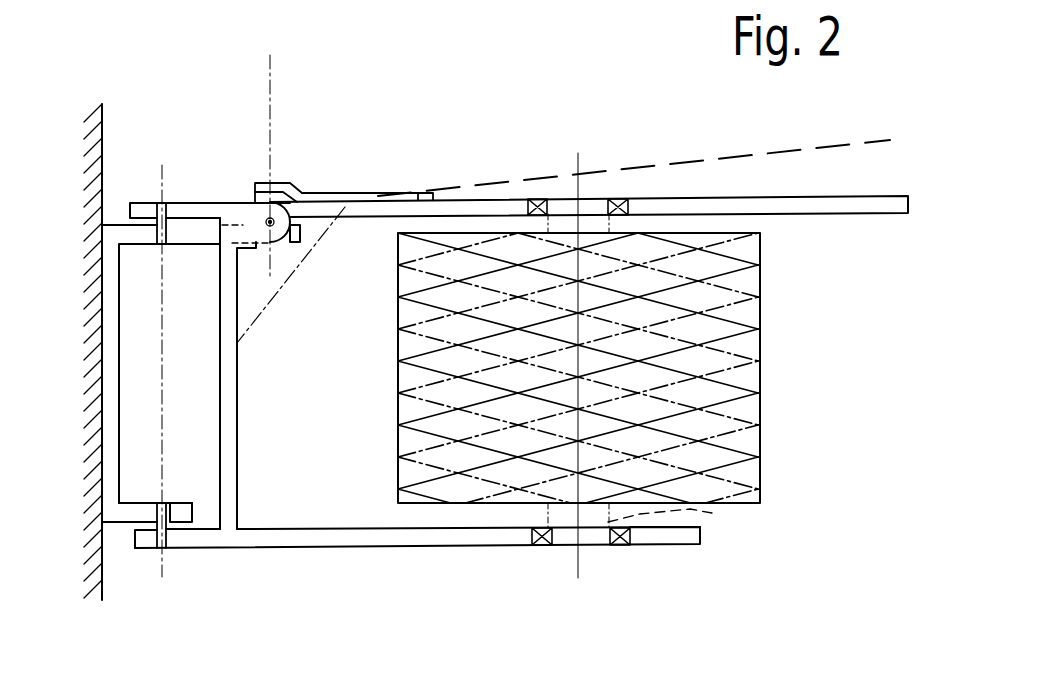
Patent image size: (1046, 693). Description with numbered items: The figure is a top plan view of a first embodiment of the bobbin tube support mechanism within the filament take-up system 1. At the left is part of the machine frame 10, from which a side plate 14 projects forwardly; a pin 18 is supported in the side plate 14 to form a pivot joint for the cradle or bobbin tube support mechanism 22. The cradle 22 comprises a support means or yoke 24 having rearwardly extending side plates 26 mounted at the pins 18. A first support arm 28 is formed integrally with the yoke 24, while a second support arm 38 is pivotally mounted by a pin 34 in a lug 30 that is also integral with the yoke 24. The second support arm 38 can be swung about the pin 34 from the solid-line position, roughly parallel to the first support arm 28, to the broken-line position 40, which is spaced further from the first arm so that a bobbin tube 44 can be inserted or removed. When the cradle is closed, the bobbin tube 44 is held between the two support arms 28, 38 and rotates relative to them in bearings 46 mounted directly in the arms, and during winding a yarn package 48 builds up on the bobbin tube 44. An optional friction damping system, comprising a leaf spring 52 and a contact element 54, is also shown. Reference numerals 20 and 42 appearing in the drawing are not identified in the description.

The filament take-up system 1 is at (488, 158).
The machine frame 10 is at (103, 118).
The side plate 14 is at (182, 503).
The pins 18 is at (170, 203).
The cavity 20 is at (162, 337).
The bobbin tube support mechanism 22 is at (280, 560).
The yoke 24 is at (226, 386).
The side plates 26 is at (207, 202).
The first support arm 28 is at (682, 545).
The lug 30 is at (250, 253).
The pin 34 is at (283, 244).
The second support arm 38 is at (840, 214).
The open position of second support arm 40 is at (695, 162).
The pivot axis line 42 is at (263, 310).
The bobbin tube 44 is at (712, 513).
The bearings 46 is at (533, 199).
The yarn package 48 is at (792, 355).
The leaf spring 52 is at (400, 182).
The contact element 54 is at (278, 184).